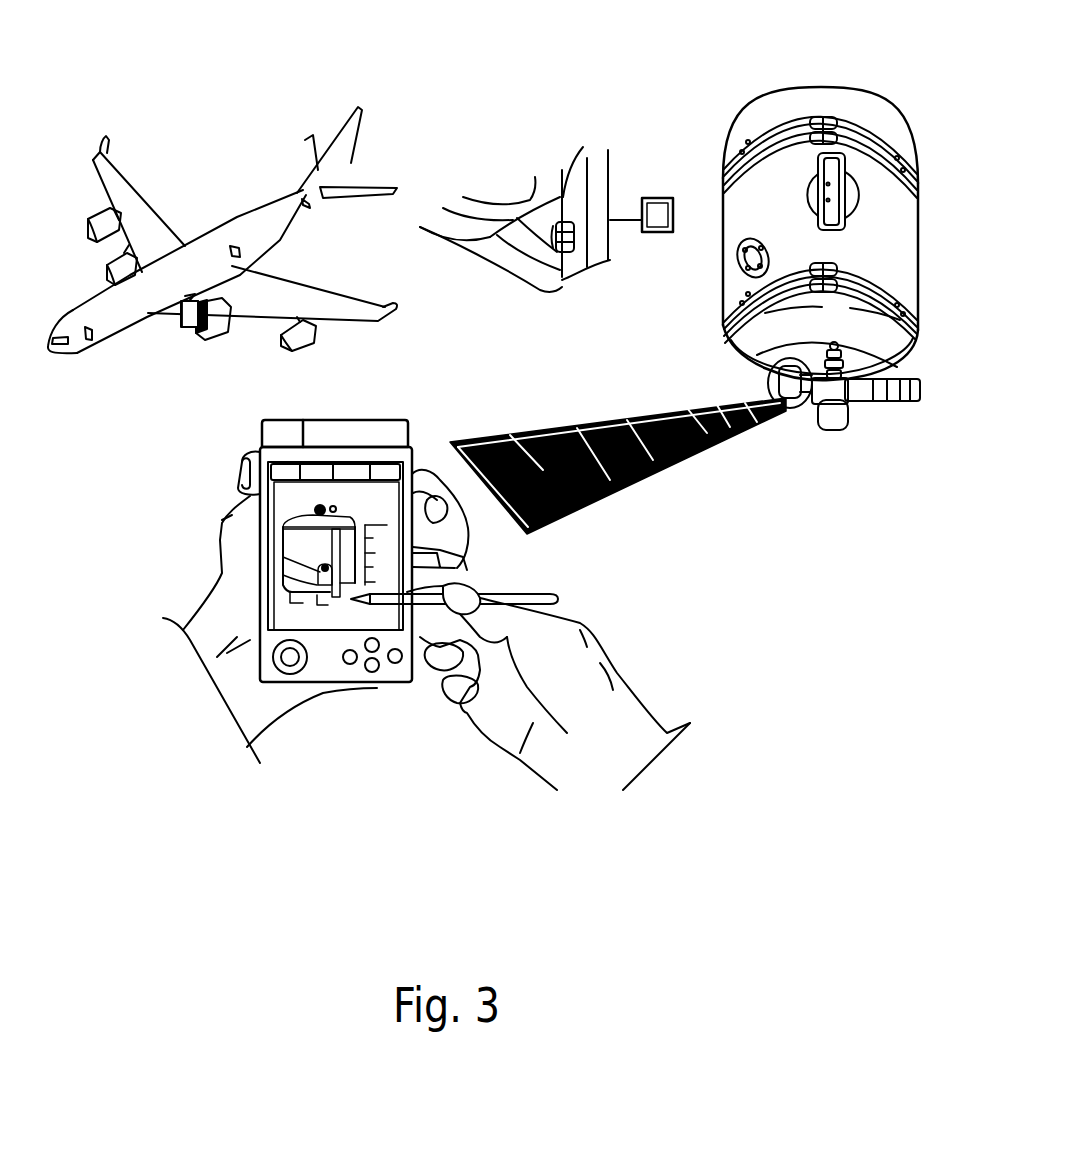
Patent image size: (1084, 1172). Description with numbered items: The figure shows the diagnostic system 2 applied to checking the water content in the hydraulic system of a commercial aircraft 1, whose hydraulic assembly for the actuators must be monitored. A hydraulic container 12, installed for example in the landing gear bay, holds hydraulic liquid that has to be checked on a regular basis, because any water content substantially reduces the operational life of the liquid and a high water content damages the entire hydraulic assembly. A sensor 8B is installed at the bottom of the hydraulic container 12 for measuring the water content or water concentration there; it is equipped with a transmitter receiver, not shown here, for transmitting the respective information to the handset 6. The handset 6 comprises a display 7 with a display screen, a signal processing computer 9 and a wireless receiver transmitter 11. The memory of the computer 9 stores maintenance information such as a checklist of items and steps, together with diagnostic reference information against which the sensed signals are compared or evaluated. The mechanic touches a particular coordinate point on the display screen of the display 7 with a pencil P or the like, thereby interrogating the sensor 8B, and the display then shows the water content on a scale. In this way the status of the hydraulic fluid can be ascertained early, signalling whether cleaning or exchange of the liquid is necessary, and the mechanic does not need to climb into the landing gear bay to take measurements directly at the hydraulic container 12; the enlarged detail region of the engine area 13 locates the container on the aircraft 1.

The commercial aircraft 1 is at (152, 158).
The diagnostic system 2 is at (636, 538).
The handset 6 is at (399, 670).
The display 7 is at (260, 593).
The sensor 8B is at (812, 427).
The signal processing computer 9 is at (387, 423).
The wireless receiver transmitter 11 is at (278, 430).
The hydraulic container 12 is at (868, 113).
The engine nacelle 13 is at (518, 263).
The pencil P is at (552, 597).